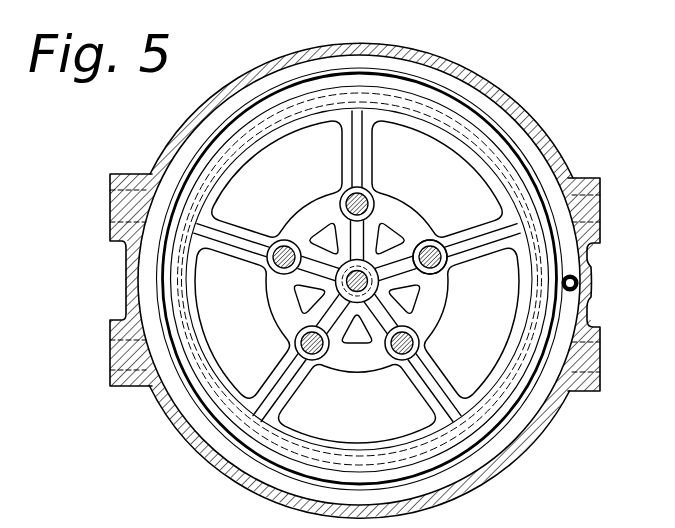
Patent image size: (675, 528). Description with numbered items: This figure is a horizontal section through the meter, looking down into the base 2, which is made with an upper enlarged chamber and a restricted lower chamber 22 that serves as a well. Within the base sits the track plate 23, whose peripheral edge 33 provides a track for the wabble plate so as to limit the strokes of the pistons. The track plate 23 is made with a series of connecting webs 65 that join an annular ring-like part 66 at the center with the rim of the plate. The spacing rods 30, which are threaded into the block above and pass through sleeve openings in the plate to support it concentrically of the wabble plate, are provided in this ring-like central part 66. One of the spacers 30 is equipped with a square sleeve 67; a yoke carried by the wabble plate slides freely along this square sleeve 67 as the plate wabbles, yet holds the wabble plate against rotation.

The base 2 is at (510, 110).
The restricted lower chamber 22 is at (467, 97).
The peripheral edge 33 is at (512, 167).
The track plate 23 is at (456, 143).
The connecting webs 65 is at (347, 155).
The annular ring-like part 66 is at (407, 228).
The spacing rods 30 is at (370, 190).
The square sleeve 67 is at (443, 263).